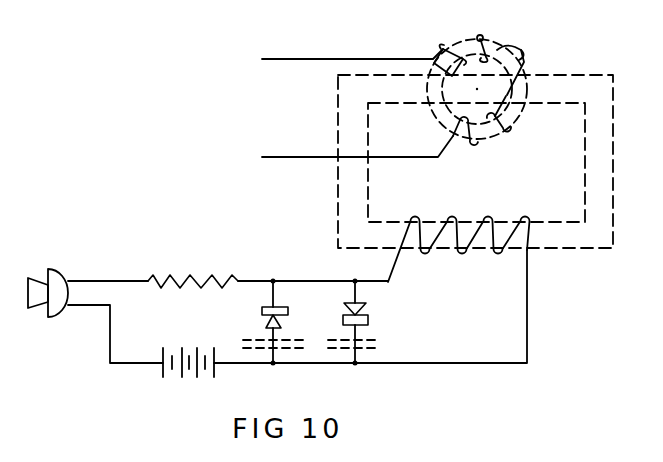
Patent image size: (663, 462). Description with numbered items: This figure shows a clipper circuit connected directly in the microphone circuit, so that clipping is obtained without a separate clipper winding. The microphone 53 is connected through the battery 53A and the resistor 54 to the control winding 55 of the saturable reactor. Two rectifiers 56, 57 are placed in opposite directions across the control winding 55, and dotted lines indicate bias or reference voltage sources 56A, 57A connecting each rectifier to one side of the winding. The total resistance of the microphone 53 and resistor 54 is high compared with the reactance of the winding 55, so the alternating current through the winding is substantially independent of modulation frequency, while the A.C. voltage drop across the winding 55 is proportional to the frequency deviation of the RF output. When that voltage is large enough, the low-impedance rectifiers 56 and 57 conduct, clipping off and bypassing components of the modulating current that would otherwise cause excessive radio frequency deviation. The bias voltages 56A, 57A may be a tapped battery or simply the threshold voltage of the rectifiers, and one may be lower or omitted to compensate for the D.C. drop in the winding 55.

The microphone 53 is at (47, 272).
The battery 53A is at (177, 350).
The resistor 54 is at (201, 274).
The control winding 55 is at (478, 218).
The rectifier 56 is at (260, 307).
The bias or reference voltage source 56A is at (254, 348).
The rectifier 57 is at (373, 318).
The bias or reference voltage source 57A is at (382, 347).